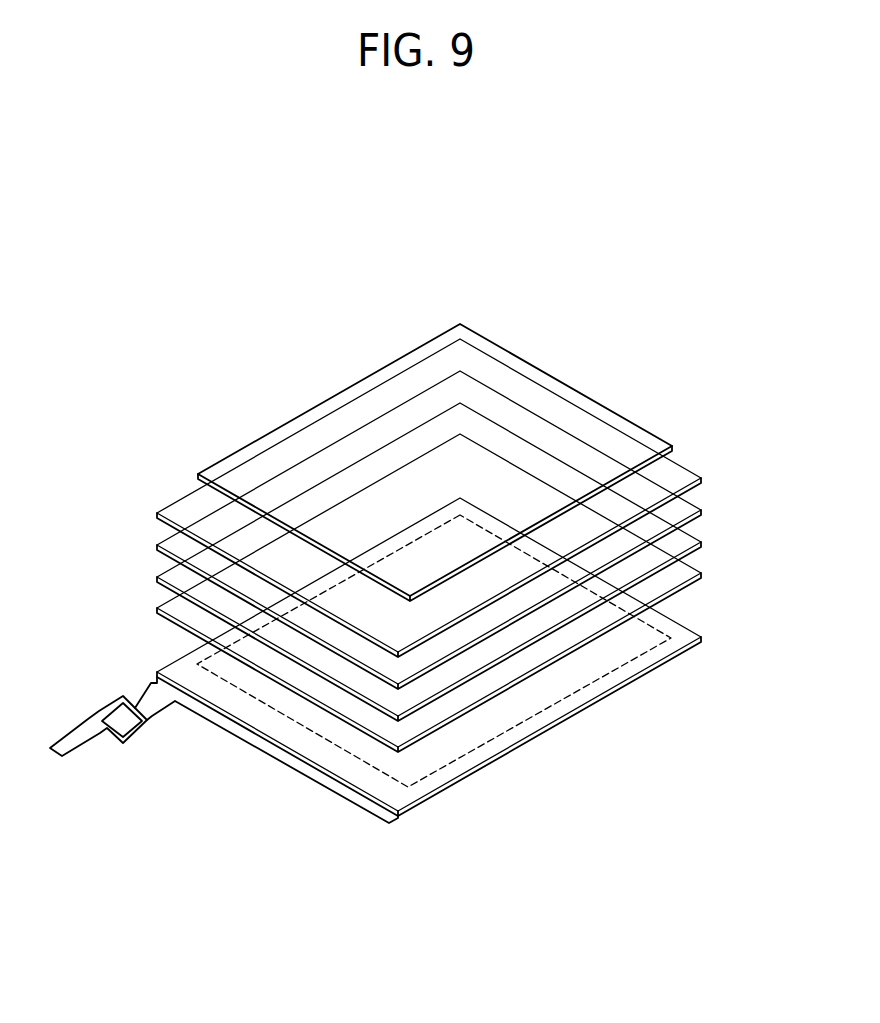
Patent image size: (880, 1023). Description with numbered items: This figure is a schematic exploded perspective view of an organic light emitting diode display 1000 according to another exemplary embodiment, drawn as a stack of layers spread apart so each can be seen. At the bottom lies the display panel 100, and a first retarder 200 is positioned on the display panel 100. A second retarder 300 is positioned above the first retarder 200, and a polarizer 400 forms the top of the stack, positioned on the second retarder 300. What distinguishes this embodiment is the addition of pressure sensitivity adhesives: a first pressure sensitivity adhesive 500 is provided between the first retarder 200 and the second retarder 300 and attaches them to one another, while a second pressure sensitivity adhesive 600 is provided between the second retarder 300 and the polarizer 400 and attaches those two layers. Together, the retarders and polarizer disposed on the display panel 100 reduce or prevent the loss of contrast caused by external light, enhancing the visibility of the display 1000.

The organic light emitting diode display 1000 is at (356, 310).
The polarizer 400 is at (650, 425).
The second pressure sensitivity adhesive 600 is at (690, 469).
The second retarder 300 is at (698, 504).
The first pressure sensitivity adhesive 500 is at (698, 537).
The first retarder 200 is at (698, 569).
The display panel 100 is at (696, 638).